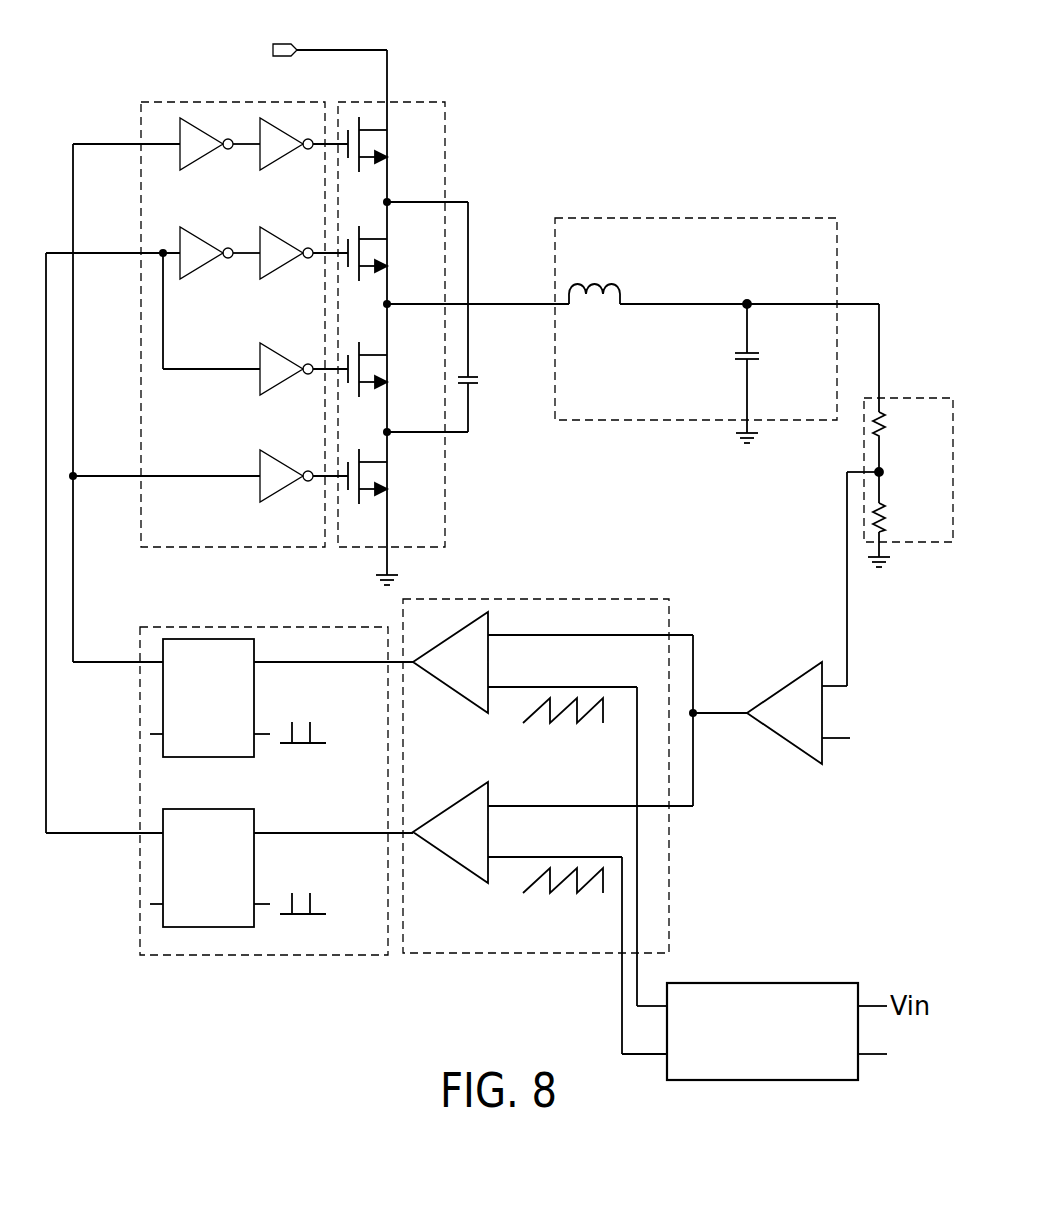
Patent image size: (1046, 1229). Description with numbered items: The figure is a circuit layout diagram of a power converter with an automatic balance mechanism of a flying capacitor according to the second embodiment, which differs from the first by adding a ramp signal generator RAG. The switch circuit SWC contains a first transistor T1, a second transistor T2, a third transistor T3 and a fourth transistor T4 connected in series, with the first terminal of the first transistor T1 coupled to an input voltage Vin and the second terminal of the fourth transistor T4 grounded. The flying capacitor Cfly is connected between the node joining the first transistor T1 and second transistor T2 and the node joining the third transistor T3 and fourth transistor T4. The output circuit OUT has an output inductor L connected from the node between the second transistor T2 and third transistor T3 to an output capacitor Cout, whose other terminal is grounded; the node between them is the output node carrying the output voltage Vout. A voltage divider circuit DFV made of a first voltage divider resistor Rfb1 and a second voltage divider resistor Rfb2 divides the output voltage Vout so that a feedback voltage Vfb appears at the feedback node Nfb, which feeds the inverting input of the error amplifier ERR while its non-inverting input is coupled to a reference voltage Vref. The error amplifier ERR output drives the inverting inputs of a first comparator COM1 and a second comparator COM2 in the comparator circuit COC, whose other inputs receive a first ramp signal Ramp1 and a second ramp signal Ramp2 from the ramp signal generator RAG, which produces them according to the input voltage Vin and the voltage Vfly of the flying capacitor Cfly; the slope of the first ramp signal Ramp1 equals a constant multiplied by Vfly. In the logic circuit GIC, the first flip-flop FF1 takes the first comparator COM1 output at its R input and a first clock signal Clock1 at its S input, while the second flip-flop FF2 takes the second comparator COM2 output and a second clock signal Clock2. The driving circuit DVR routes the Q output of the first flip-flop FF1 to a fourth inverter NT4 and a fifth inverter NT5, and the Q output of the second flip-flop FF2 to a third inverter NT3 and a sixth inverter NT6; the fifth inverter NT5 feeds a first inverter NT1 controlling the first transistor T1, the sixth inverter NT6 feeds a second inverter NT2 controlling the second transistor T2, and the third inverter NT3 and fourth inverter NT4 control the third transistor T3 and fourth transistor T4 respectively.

The driving circuit DVR is at (233, 102).
The switch circuit SWC is at (420, 103).
The output circuit OUT is at (680, 218).
The voltage divider circuit DFV is at (915, 398).
The comparator circuit COC is at (542, 599).
The logic circuit GIC is at (140, 875).
The ramp signal generator RAG is at (763, 983).
The error amplifier ERR is at (783, 740).
The first comparator COM1 is at (450, 688).
The second comparator COM2 is at (450, 858).
The first flip-flop FF1 is at (254, 686).
The second flip-flop FF2 is at (254, 856).
The first clock signal Clock1 is at (312, 751).
The second clock signal Clock2 is at (312, 921).
The first ramp signal Ramp1 is at (566, 729).
The second ramp signal Ramp2 is at (566, 899).
The first transistor T1 is at (383, 144).
The second transistor T2 is at (383, 253).
The third transistor T3 is at (383, 369).
The fourth transistor T4 is at (383, 476).
The first inverter NT1 is at (289, 160).
The second inverter NT2 is at (289, 270).
The third inverter NT3 is at (289, 387).
The fourth inverter NT4 is at (289, 493).
The fifth inverter NT5 is at (207, 160).
The sixth inverter NT6 is at (207, 270).
The flying capacitor Cfly is at (461, 317).
The output inductor L is at (503, 278).
The output capacitor Cout is at (776, 373).
The input voltage Vin is at (324, 34).
The output voltage Vout is at (749, 290).
The first voltage divider resistor Rfb1 is at (909, 372).
The second voltage divider resistor Rfb2 is at (906, 535).
The feedback node Nfb is at (889, 562).
The feedback voltage Vfb is at (859, 671).
The reference voltage Vref is at (865, 738).
The voltage of the flying capacitor Vfly is at (899, 1053).